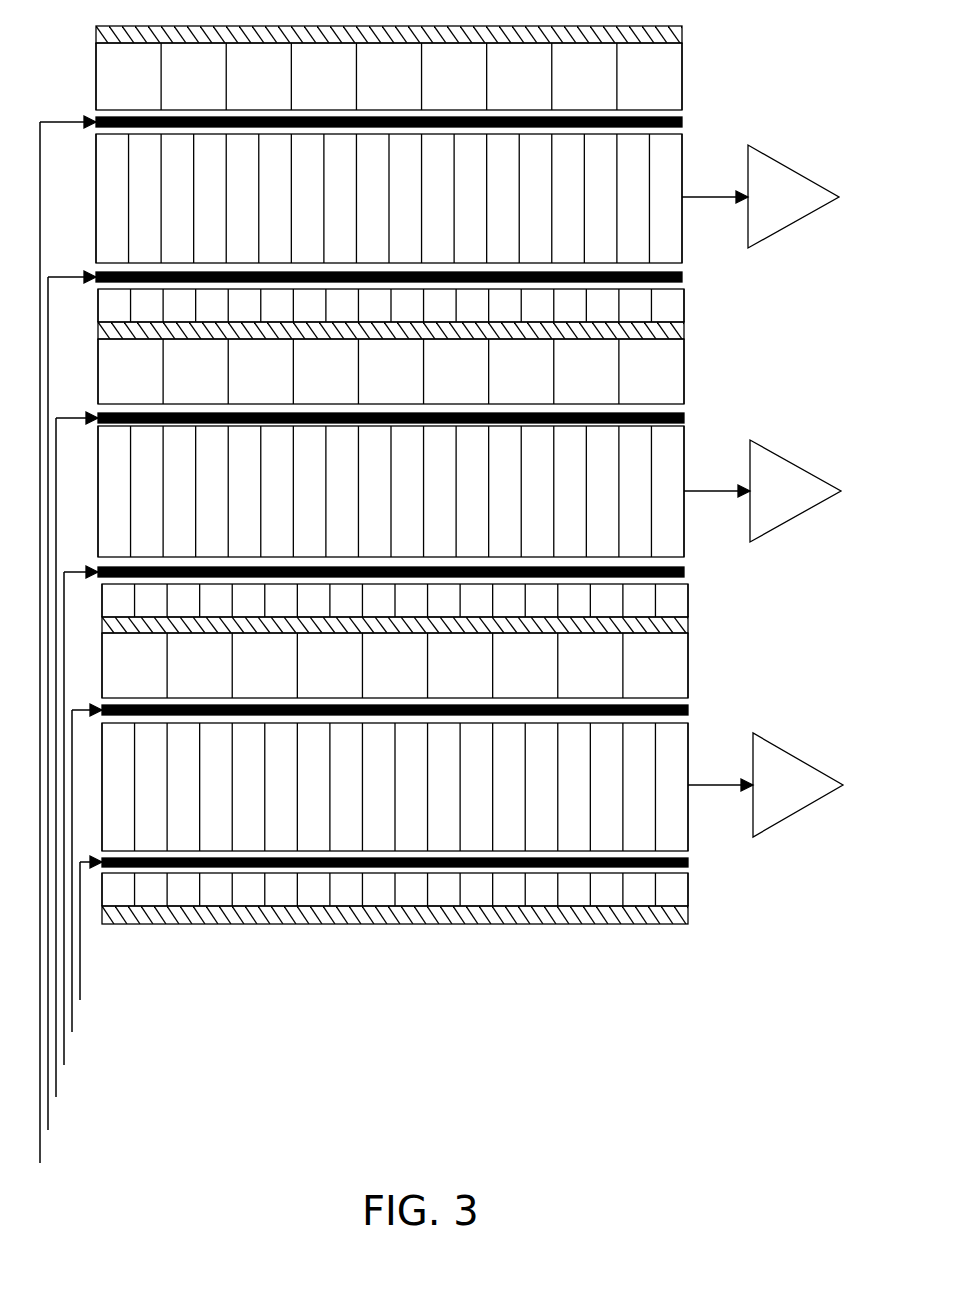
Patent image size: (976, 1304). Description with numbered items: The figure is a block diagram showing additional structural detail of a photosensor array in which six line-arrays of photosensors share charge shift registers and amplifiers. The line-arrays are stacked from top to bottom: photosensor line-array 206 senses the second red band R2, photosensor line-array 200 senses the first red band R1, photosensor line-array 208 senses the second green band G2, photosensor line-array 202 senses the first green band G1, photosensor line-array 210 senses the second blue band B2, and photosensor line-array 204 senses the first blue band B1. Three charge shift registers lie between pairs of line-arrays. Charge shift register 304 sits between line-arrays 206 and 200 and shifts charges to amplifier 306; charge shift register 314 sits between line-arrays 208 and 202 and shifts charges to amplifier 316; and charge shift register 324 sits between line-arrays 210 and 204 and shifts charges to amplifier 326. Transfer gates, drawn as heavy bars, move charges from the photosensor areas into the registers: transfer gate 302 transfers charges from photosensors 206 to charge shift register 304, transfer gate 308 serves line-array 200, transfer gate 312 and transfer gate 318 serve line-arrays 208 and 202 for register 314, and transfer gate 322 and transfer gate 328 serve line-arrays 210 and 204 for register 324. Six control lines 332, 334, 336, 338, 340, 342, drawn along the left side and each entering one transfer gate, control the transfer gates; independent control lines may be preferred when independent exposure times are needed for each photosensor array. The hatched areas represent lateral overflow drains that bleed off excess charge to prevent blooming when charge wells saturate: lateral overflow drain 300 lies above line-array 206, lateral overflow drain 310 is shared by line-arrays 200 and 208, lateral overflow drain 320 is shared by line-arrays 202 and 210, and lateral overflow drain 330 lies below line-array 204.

The lateral overflow drain 300 is at (683, 27).
The photosensor line-array 206 is at (684, 70).
The transfer gate 302 is at (684, 117).
The charge shift register 304 is at (686, 168).
The amplifier 306 is at (797, 207).
The transfer gate 308 is at (686, 270).
The photosensor line-array 200 is at (687, 298).
The lateral overflow drain 310 is at (687, 322).
The photosensor line-array 208 is at (687, 365).
The transfer gate 312 is at (687, 413).
The charge shift register 314 is at (689, 466).
The amplifier 316 is at (799, 501).
The transfer gate 318 is at (689, 567).
The photosensor line-array 202 is at (691, 592).
The lateral overflow drain 320 is at (691, 617).
The photosensor line-array 210 is at (691, 660).
The transfer gate 322 is at (691, 705).
The charge shift register 324 is at (691, 759).
The amplifier 326 is at (801, 795).
The transfer gate 328 is at (691, 858).
The photosensor line-array 204 is at (691, 888).
The lateral overflow drain 330 is at (691, 906).
The control line 332 is at (80, 990).
The control line 334 is at (72, 1023).
The control line 336 is at (64, 1056).
The control line 338 is at (56, 1088).
The control line 340 is at (48, 1121).
The control line 342 is at (40, 1153).